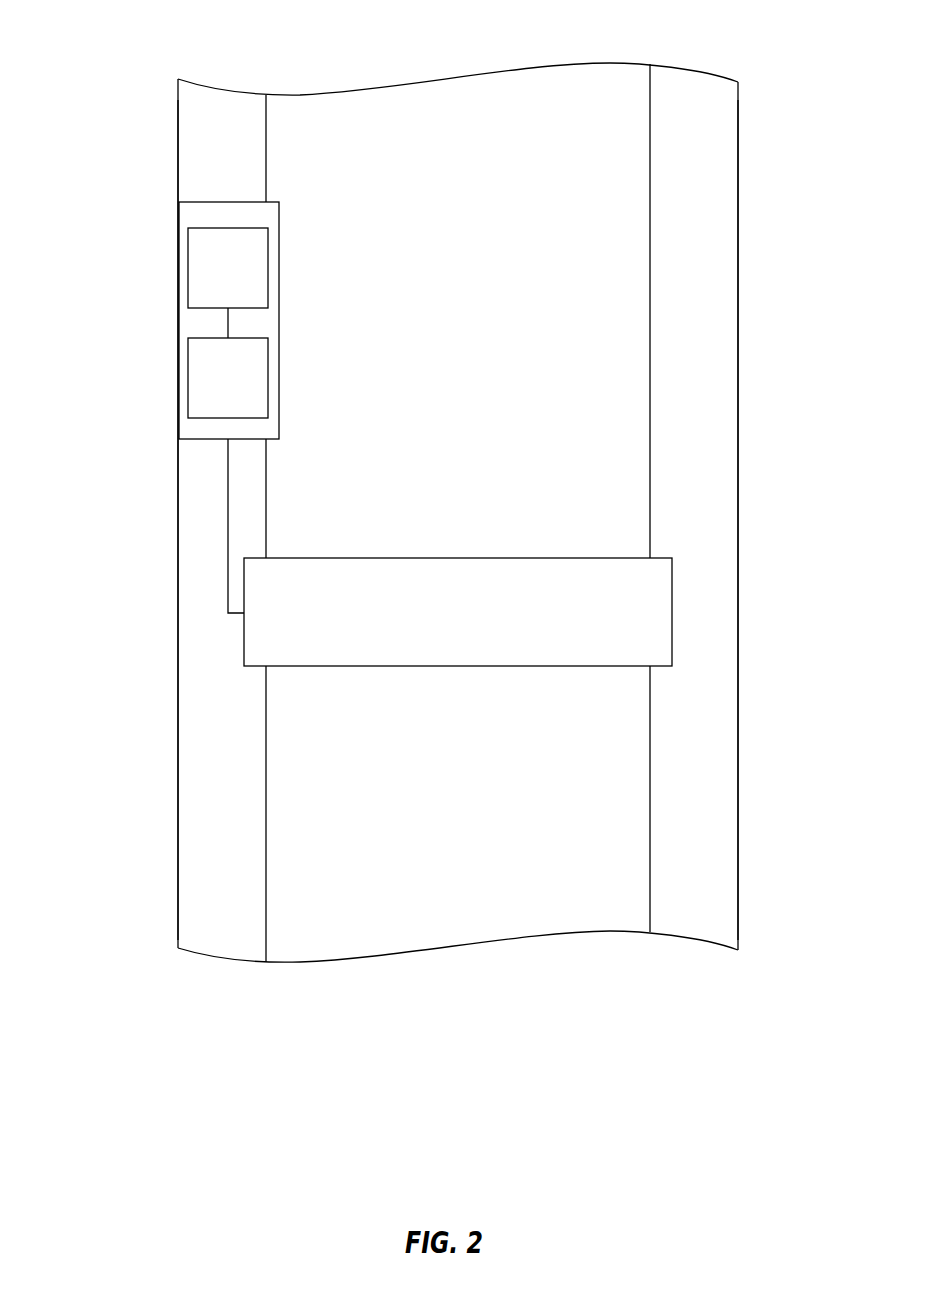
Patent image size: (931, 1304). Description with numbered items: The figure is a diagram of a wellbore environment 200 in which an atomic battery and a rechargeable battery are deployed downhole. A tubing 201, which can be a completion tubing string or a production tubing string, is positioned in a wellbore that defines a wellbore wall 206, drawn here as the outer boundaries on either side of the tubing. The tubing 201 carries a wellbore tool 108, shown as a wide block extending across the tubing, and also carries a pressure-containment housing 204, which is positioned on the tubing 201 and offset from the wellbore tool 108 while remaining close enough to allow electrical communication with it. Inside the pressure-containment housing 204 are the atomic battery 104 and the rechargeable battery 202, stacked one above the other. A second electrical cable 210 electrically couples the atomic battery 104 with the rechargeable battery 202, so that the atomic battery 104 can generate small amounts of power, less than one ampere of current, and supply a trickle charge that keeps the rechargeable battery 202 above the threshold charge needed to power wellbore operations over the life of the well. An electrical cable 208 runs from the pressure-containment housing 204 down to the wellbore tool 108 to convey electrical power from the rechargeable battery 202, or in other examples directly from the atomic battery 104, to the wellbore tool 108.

The wellbore environment 200 is at (135, 136).
The tubing 201 is at (266, 738).
The wellbore wall 206 is at (178, 587).
The pressure-containment housing 204 is at (279, 320).
The atomic battery 104 is at (243, 284).
The rechargeable battery 202 is at (243, 394).
The second electrical cable 210 is at (228, 312).
The electrical cable 208 is at (228, 490).
The wellbore tool 108 is at (470, 632).